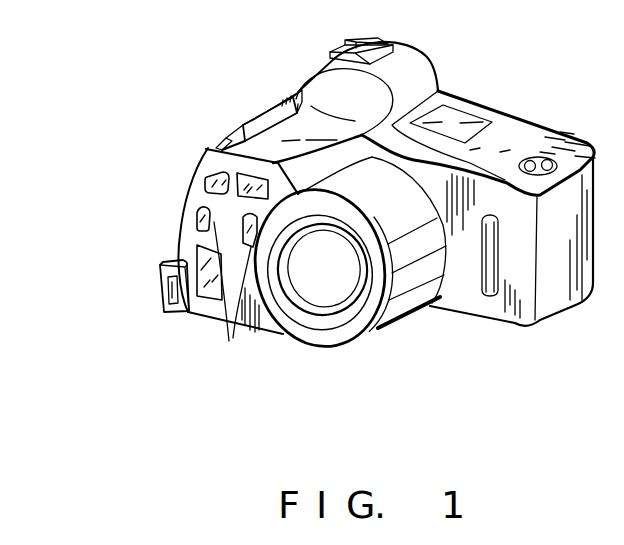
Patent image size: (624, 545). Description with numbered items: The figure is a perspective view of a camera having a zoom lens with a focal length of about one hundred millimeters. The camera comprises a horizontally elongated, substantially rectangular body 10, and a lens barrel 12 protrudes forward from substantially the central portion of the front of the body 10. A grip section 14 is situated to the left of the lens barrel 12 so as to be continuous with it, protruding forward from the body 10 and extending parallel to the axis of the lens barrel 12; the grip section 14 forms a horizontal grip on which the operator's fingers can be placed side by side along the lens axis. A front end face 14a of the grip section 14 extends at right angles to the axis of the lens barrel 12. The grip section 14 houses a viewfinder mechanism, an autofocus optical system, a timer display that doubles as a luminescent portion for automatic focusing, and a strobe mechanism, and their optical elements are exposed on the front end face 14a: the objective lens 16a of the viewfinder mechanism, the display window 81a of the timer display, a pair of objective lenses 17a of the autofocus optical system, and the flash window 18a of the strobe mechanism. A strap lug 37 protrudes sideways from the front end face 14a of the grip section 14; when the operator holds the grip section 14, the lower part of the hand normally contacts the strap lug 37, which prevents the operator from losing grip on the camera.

The body 10 is at (568, 140).
The lens barrel 12 is at (399, 320).
The grip section 14 is at (226, 138).
The front end face 14a is at (192, 242).
The objective lens 16a is at (253, 181).
The objective lenses 17a is at (244, 243).
The flash window 18a is at (199, 298).
The strap lug 37 is at (162, 296).
The display window 81a is at (206, 178).